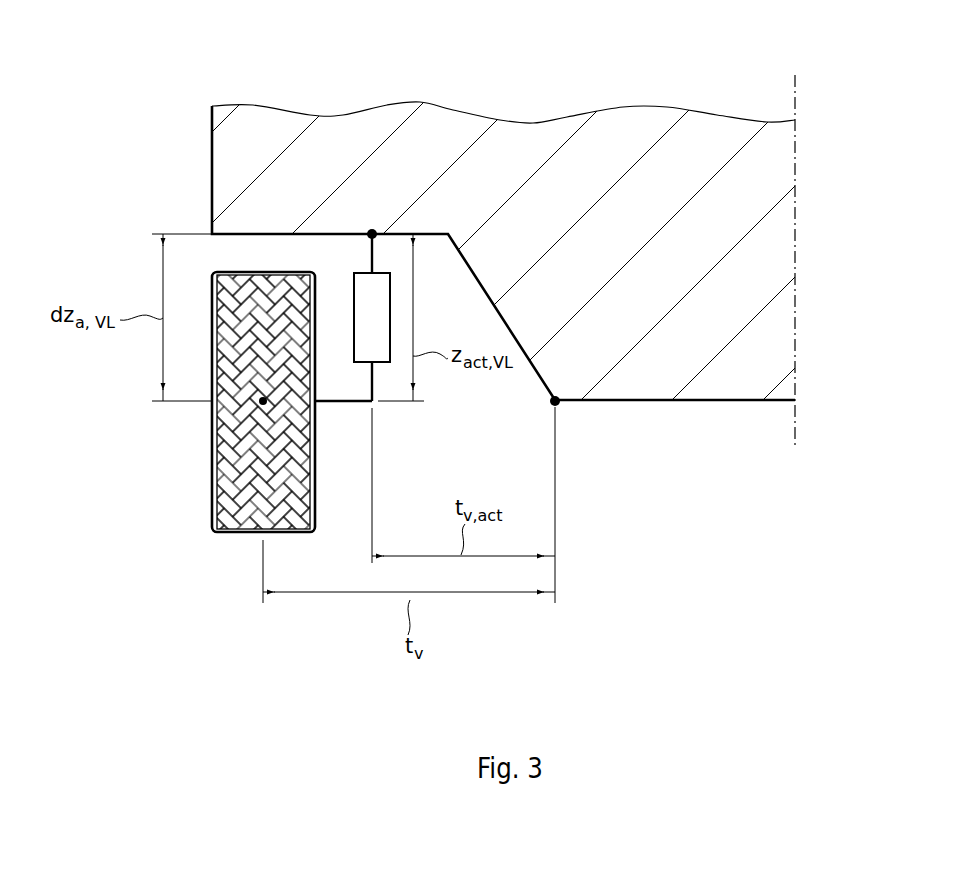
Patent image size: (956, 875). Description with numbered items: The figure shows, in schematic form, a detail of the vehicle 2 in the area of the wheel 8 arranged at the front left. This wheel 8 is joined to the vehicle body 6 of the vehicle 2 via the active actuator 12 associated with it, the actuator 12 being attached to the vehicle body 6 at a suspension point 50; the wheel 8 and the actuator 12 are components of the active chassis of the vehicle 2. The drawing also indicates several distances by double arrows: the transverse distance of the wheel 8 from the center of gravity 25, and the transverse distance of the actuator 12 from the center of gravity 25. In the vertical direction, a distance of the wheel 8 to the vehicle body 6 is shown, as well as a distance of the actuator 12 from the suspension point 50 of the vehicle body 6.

The vehicle 2 is at (478, 230).
The vehicle body 6 is at (214, 161).
The front left wheel 8 is at (212, 440).
The active actuator 12 is at (384, 330).
The center of gravity 25 is at (550, 403).
The suspension point 50 is at (370, 228).